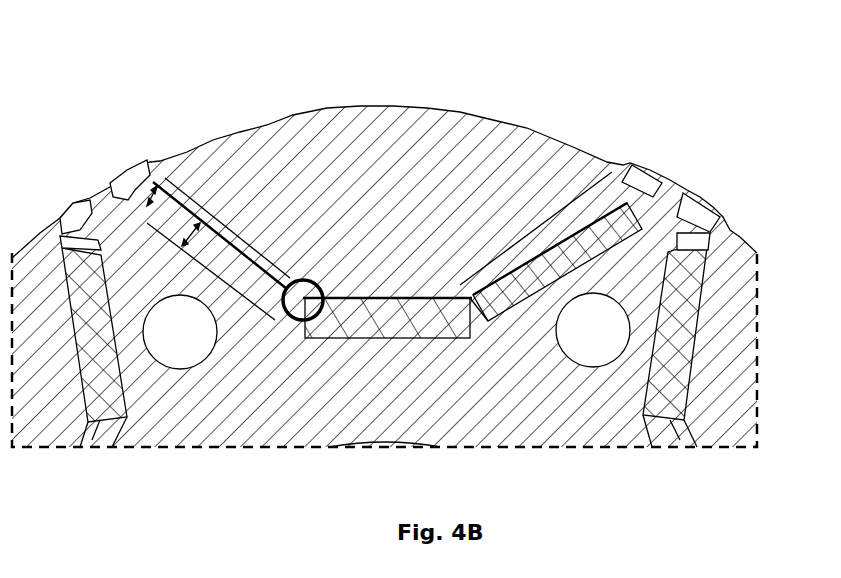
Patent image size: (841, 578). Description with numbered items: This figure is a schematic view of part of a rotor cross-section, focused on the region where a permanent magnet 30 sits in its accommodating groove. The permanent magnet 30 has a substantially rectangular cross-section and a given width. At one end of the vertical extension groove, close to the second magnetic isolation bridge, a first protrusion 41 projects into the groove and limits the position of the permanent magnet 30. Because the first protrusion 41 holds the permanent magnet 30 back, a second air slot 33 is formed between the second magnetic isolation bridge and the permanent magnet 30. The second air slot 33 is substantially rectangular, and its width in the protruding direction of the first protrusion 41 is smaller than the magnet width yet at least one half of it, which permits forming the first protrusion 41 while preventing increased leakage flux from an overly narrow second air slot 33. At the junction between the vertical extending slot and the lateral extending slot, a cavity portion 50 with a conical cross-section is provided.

The permanent magnet 30 is at (230, 253).
The second air slot 33 is at (157, 188).
The first protrusion 41 is at (627, 214).
The cavity portion 50 is at (293, 327).